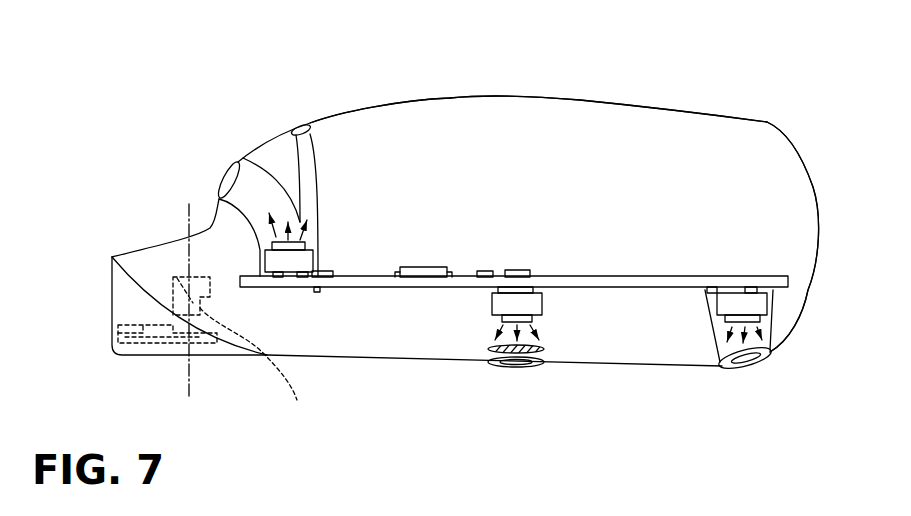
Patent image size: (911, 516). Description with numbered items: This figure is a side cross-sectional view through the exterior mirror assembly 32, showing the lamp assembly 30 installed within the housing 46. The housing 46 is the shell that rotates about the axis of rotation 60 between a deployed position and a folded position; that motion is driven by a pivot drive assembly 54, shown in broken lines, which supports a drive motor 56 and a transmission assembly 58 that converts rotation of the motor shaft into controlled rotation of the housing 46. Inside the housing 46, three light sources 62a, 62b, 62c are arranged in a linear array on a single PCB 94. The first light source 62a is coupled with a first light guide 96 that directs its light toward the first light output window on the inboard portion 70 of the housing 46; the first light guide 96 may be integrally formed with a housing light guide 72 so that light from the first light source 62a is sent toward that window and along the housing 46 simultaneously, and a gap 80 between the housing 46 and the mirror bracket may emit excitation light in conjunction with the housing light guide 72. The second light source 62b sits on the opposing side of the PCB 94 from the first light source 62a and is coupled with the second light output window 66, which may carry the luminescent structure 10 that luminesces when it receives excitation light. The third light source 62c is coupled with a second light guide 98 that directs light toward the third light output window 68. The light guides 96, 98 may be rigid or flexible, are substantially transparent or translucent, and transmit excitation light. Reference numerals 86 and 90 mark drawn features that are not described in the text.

The luminescent structure 10 is at (548, 359).
The lamp assembly 30 is at (648, 158).
The mirror assembly 32 is at (611, 97).
The housing 46 is at (407, 98).
The pivot drive assembly 54 is at (200, 343).
The drive motor 56 is at (143, 353).
The transmission assembly 58 is at (256, 366).
The axis of rotation 60 is at (188, 223).
The first light source 62a is at (294, 254).
The second light source 62b is at (510, 300).
The third light source 62c is at (740, 303).
The second light output window 66 is at (500, 364).
The third light output window 68 is at (752, 361).
The inboard portion 70 is at (211, 198).
The housing light guide 72 is at (310, 156).
The gap 80 is at (135, 289).
The rear wall 86 is at (819, 283).
The controller 90 is at (425, 267).
The PCB 94 is at (623, 284).
The first light guide 96 is at (264, 163).
The second light guide 98 is at (712, 339).